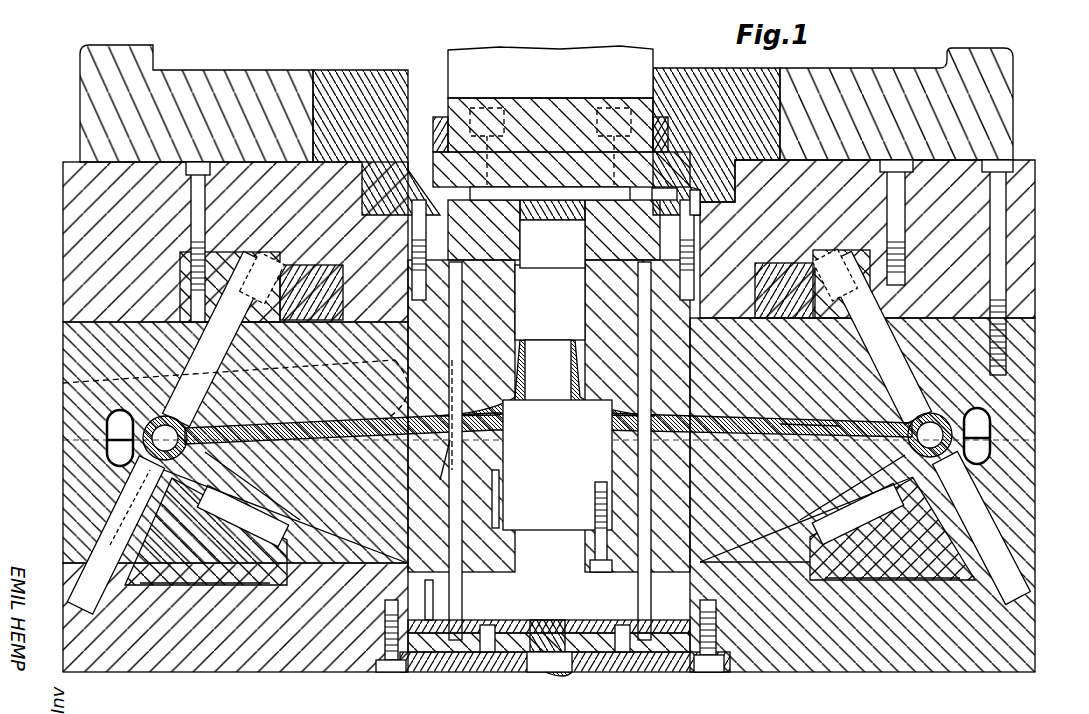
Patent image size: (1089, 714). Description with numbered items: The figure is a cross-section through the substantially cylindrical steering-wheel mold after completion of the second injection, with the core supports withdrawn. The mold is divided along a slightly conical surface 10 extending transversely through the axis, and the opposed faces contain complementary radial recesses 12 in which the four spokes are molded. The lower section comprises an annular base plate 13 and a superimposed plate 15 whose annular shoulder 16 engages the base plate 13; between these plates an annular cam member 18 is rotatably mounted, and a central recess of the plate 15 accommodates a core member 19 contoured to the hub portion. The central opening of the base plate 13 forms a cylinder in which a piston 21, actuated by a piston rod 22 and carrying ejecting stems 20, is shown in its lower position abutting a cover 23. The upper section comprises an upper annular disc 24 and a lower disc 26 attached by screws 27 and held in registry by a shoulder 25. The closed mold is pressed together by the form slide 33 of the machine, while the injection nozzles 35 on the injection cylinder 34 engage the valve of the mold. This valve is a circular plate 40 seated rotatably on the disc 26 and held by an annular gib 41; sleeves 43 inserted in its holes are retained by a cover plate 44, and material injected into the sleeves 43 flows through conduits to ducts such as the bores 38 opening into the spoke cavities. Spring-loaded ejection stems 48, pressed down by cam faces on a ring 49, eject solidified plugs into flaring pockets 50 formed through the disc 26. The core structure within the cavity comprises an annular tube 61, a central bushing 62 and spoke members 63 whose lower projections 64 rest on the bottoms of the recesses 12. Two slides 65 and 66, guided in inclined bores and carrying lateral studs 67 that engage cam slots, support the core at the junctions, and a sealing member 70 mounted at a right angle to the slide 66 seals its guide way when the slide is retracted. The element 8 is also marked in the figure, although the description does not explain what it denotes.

The pin 8 is at (470, 366).
The slightly conical surface 10 is at (1012, 438).
The radial recesses 12 is at (712, 398).
The annular base plate 13 is at (958, 658).
The superimposed plate 15 is at (1028, 486).
The annular shoulder 16 is at (750, 550).
The annular cam member 18 is at (228, 575).
The core member 19 is at (540, 470).
The ejecting stems 20 is at (462, 600).
The piston 21 is at (600, 652).
The piston rod 22 is at (540, 672).
The cover 23 is at (662, 660).
The upper annular disc 24 is at (1030, 185).
The shoulder 25 is at (705, 292).
The lower disc 26 is at (1030, 372).
The screws 27 is at (1002, 258).
The form slide 33 is at (1005, 112).
The injection cylinder 34 is at (452, 84).
The injection nozzles 35 is at (612, 130).
The bores 38 is at (456, 338).
The circular plate 40 is at (700, 235).
The annular gib 41 is at (705, 216).
The sleeves 43 is at (554, 234).
The cover plate 44 is at (550, 215).
The ejection stems 48 is at (664, 191).
The ring 49 is at (650, 98).
The pockets 50 is at (235, 387).
The annular tube 61 is at (925, 400).
The central bushing 62 is at (548, 334).
The spoke members 63 is at (765, 437).
The lower projections 64 is at (429, 465).
The slide 65 is at (185, 362).
The slide 66 is at (82, 608).
The lateral studs 67 is at (140, 525).
The sealing member 70 is at (270, 525).